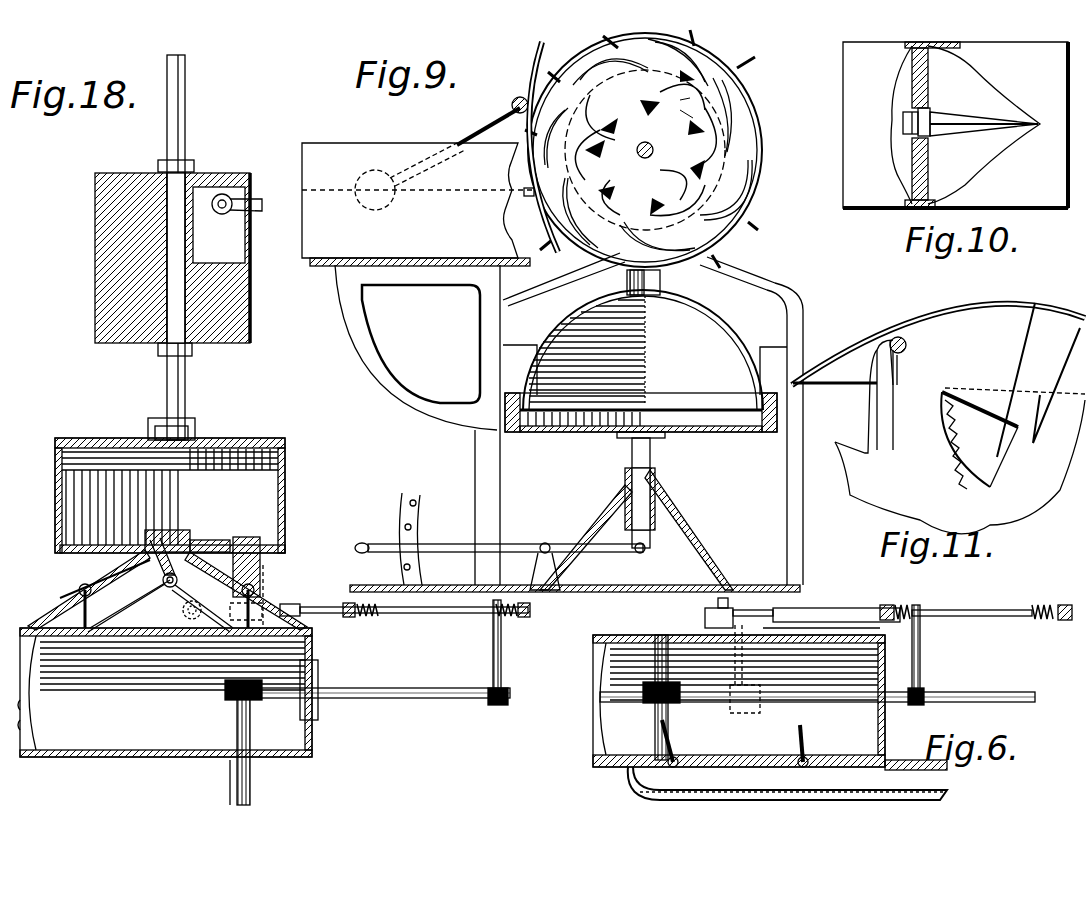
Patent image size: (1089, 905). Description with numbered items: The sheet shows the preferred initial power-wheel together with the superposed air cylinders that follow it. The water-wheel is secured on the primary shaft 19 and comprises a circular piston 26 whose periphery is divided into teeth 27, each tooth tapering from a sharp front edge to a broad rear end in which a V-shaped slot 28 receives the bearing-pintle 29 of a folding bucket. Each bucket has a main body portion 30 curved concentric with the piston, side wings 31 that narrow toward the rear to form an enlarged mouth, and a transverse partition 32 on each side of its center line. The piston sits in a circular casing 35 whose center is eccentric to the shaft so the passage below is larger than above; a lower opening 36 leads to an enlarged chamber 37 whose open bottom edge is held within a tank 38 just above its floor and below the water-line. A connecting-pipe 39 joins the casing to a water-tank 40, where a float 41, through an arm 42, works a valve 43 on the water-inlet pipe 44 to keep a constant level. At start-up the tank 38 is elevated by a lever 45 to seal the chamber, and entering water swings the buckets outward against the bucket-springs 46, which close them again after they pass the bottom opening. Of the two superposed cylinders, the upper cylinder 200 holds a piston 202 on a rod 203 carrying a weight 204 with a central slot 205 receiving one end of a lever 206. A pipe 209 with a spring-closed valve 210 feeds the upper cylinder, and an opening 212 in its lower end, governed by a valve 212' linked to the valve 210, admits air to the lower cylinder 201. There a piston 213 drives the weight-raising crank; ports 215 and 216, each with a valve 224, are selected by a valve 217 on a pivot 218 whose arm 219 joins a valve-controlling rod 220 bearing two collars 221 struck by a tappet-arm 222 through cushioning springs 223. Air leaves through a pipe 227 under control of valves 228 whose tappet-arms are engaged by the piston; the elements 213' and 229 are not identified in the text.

In FIG. 9, the shaft 19 is at (642, 158).
In FIG. 9, the piston 26 is at (645, 150).
In FIG. 11, the piston 26 is at (960, 442).
In FIG. 9, the teeth 27 is at (690, 100).
In FIG. 10, the teeth 27 is at (970, 126).
In FIG. 11, the teeth 27 is at (1015, 380).
In FIG. 10, the V-shaped slot 28 is at (905, 130).
In FIG. 11, the V-shaped slot 28 is at (897, 375).
In FIG. 10, the bearing-pintle 29 is at (930, 112).
In FIG. 11, the bearing-pintle 29 is at (906, 346).
In FIG. 9, the main body portion 30 is at (620, 60).
In FIG. 10, the main body portion 30 is at (965, 44).
In FIG. 11, the main body portion 30 is at (1030, 312).
In FIG. 10, the side wings 31 is at (933, 42).
In FIG. 11, the side wings 31 is at (853, 365).
In FIG. 10, the partition 32 is at (928, 74).
In FIG. 11, the partition 32 is at (900, 338).
In FIG. 9, the circular casing 35 is at (722, 72).
In FIG. 9, the opening 36 is at (650, 290).
In FIG. 9, the enlarged chamber 37 is at (643, 350).
In FIG. 9, the tank 38 is at (556, 432).
In FIG. 9, the connecting-pipe 39 is at (524, 192).
In FIG. 9, the water-tank 40 is at (385, 143).
In FIG. 9, the float 41 is at (378, 208).
In FIG. 9, the arm 42 is at (478, 130).
In FIG. 9, the valve 43 is at (512, 100).
In FIG. 9, the water-inlet pipe 44 is at (540, 50).
In FIG. 9, the lever 45 is at (517, 544).
In FIG. 9, the bucket-springs 46 is at (618, 128).
In FIG. 11, the bucket-springs 46 is at (945, 436).
In FIG. 18, the upper cylinder 200 is at (285, 497).
In FIG. 18, the lower cylinder 201 is at (177, 758).
In FIG. 6, the lower cylinder 201 is at (626, 635).
In FIG. 18, the piston 202 is at (245, 447).
In FIG. 18, the rod 203 is at (185, 365).
In FIG. 18, the weight 204 is at (250, 292).
In FIG. 18, the central slot 205 is at (250, 248).
In FIG. 18, the lever 206 is at (262, 203).
In FIG. 18, the pipe 209 is at (268, 600).
In FIG. 18, the valve 210 is at (262, 550).
In FIG. 18, the opening 212 is at (182, 514).
In FIG. 18, the valve 212' is at (232, 524).
In FIG. 18, the piston 213 is at (221, 742).
In FIG. 18, the shaft 213' is at (375, 695).
In FIG. 6, the shaft 213' is at (817, 669).
In FIG. 18, the port 215 is at (102, 585).
In FIG. 18, the port 216 is at (167, 590).
In FIG. 18, the valve 217 is at (150, 590).
In FIG. 18, the pivot 218 is at (178, 545).
In FIG. 18, the arm 219 is at (181, 616).
In FIG. 6, the arm 219 is at (705, 618).
In FIG. 18, the valve-controlling rod 220 is at (408, 613).
In FIG. 6, the valve-controlling rod 220 is at (962, 610).
In FIG. 18, the collars 221 is at (349, 617).
In FIG. 6, the collars 221 is at (890, 605).
In FIG. 18, the tappet-arm 222 is at (501, 670).
In FIG. 6, the tappet-arm 222 is at (920, 645).
In FIG. 18, the springs 223 is at (364, 603).
In FIG. 6, the springs 223 is at (912, 605).
In FIG. 18, the valve 224 is at (79, 600).
In FIG. 6, the pipe 227 is at (780, 780).
In FIG. 6, the valves 228 is at (675, 750).
In FIG. 6, the lever 229 is at (802, 745).